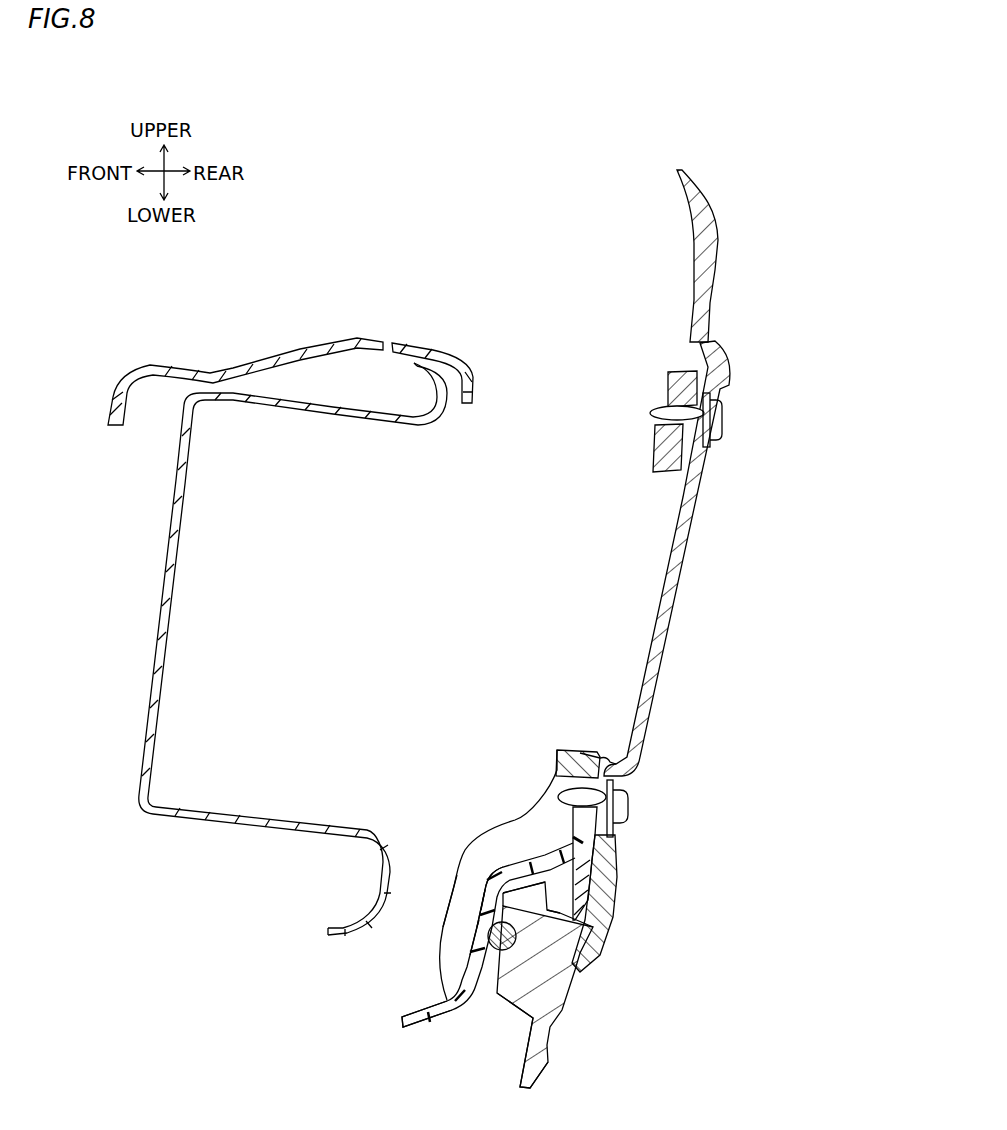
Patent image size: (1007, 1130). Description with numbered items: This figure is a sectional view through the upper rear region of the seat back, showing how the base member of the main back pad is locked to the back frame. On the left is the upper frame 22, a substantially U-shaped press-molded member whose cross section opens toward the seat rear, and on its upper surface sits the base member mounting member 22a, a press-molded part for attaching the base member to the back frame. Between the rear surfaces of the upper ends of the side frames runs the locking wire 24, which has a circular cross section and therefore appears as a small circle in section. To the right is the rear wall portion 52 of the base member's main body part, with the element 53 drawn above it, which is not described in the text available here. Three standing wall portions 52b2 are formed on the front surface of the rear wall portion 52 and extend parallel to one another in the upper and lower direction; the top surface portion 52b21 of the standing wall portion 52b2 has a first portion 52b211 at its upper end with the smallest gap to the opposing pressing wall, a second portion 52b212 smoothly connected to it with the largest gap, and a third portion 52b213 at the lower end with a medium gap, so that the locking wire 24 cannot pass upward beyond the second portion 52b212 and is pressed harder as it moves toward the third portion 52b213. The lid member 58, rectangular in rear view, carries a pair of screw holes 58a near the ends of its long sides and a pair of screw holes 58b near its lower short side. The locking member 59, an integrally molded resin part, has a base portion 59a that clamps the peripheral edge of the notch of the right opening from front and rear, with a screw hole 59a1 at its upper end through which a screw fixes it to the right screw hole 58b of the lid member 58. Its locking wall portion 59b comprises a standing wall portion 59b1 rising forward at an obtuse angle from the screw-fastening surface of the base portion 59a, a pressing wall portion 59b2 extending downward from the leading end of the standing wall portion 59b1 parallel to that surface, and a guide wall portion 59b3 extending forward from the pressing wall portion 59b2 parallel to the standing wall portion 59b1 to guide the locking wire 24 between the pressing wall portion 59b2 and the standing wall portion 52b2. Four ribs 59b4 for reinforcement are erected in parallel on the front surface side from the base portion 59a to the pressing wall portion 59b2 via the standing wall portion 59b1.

The upper frame 22 is at (251, 615).
The base member mounting member 22a is at (310, 350).
The locking wire 24 is at (463, 910).
The rear wall portion 52 is at (503, 955).
The standing wall portion 52b2 is at (512, 1000).
The top surface portion 52b21 is at (493, 960).
The first portion 52b211 is at (485, 887).
The second portion 52b212 is at (560, 975).
The third portion 52b213 is at (493, 970).
The upper cover (51, 50) 53 is at (692, 240).
The lid member 58 is at (670, 589).
The screw holes 58a is at (716, 428).
The screw holes 58b is at (628, 803).
The locking member 59 is at (503, 866).
The base portion 59a is at (617, 867).
The screw hole 59a1 is at (560, 750).
The locking wall portion 59b is at (449, 898).
The standing wall portion 59b1 is at (517, 860).
The pressing wall portion 59b2 is at (488, 937).
The guide wall portion 59b3 is at (417, 1007).
The ribs 59b4 is at (478, 853).